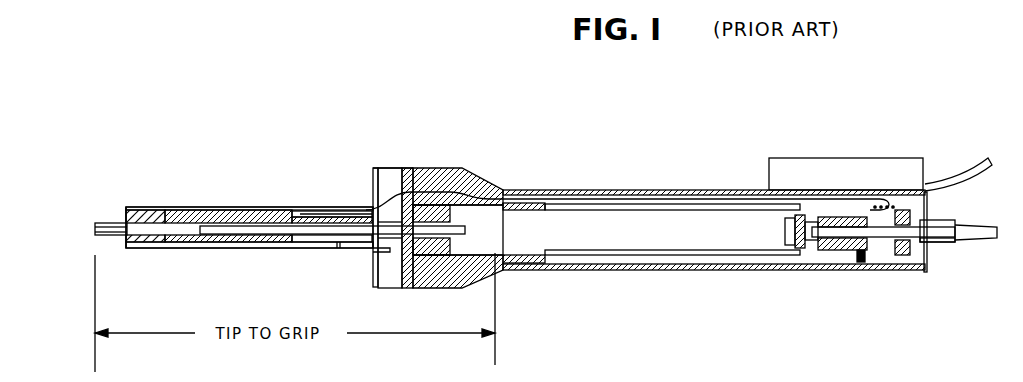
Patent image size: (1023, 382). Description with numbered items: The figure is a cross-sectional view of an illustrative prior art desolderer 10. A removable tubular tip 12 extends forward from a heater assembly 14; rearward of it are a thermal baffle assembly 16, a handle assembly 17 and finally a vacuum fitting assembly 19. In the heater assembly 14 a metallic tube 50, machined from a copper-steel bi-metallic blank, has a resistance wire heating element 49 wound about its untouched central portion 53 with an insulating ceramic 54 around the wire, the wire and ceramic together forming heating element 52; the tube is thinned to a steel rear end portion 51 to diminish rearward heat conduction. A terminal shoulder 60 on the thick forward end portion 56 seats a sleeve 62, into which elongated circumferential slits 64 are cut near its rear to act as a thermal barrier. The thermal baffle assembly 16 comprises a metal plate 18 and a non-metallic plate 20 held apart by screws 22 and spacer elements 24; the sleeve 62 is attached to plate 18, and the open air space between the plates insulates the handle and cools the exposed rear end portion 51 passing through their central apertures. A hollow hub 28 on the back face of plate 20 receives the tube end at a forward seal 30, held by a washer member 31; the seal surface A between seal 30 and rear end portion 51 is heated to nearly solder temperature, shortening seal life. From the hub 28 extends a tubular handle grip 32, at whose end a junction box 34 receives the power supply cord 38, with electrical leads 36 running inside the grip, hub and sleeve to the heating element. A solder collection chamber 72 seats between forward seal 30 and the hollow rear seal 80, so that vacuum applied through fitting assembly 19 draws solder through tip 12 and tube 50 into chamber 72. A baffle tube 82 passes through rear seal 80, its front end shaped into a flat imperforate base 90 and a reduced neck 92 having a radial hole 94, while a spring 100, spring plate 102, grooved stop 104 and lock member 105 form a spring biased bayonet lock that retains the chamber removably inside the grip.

The desolderer 10 is at (538, 115).
The removable tubular tip 12 is at (105, 222).
The heater assembly 14 is at (190, 207).
The thermal baffle assembly 16 is at (368, 141).
The handle assembly 17 is at (597, 180).
The metal circular plate 18 is at (373, 252).
The vacuum fitting assembly 19 is at (886, 205).
The non-metallic circular plate 20 is at (406, 290).
The screws 22 is at (373, 173).
The spacer elements 24 is at (388, 173).
The hollow hub 28 is at (463, 172).
The forward seal 30 is at (495, 248).
The washer member 31 is at (458, 289).
The tubular handle grip 32 is at (580, 272).
The junction box 34 is at (815, 158).
The electrical leads 36 is at (367, 208).
The power supply cord 38 is at (960, 168).
The resistance wire heating element 49 is at (181, 248).
The metallic tube 50 is at (280, 240).
The rear end portion 51 is at (467, 230).
The heating element 52 is at (168, 250).
The central portion 53 is at (228, 244).
The insulating ceramic 54 is at (218, 210).
The forward end portion 56 is at (147, 211).
The terminal shoulder 60 is at (127, 208).
The sleeve 62 is at (265, 207).
The elongated circumferential slits 64 is at (323, 211).
The solder collection chamber 72 is at (615, 250).
The rear seal 80 is at (845, 252).
The baffle tube 82 is at (940, 228).
The flat imperforate base 90 is at (790, 222).
The reduced neck 92 is at (815, 256).
The radial hole 94 is at (796, 240).
The spring 100 is at (900, 258).
The spring plate 102 is at (866, 258).
The grooved stop 104 is at (928, 245).
The lock member 105 is at (930, 204).
The seal surface A is at (430, 290).